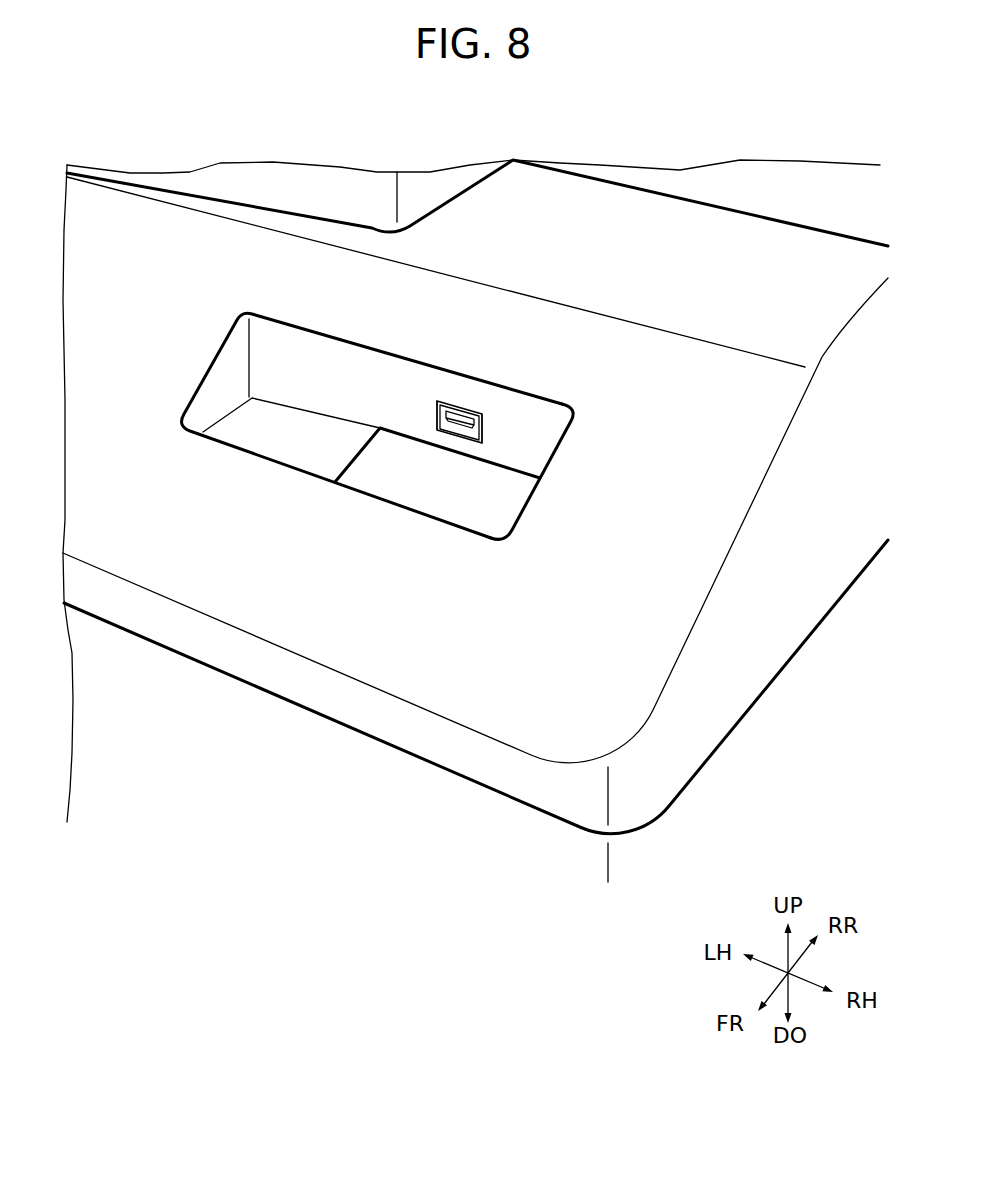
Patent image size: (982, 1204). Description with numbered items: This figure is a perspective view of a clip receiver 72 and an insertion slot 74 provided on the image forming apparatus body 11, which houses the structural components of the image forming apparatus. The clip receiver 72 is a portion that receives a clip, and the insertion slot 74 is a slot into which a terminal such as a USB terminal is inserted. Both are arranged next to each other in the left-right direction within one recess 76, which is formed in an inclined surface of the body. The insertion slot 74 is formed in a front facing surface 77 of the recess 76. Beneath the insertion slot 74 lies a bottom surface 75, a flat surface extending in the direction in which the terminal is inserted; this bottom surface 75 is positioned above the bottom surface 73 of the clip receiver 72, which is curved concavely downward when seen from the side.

The image forming apparatus body 11 is at (88, 678).
The clip receiver 72 is at (258, 429).
The bottom surface of the clip receiver 73 is at (323, 458).
The insertion slot 74 is at (463, 405).
The bottom surface below the insertion slot 75 is at (427, 495).
The recess 76 is at (350, 359).
The front facing surface 77 is at (533, 417).